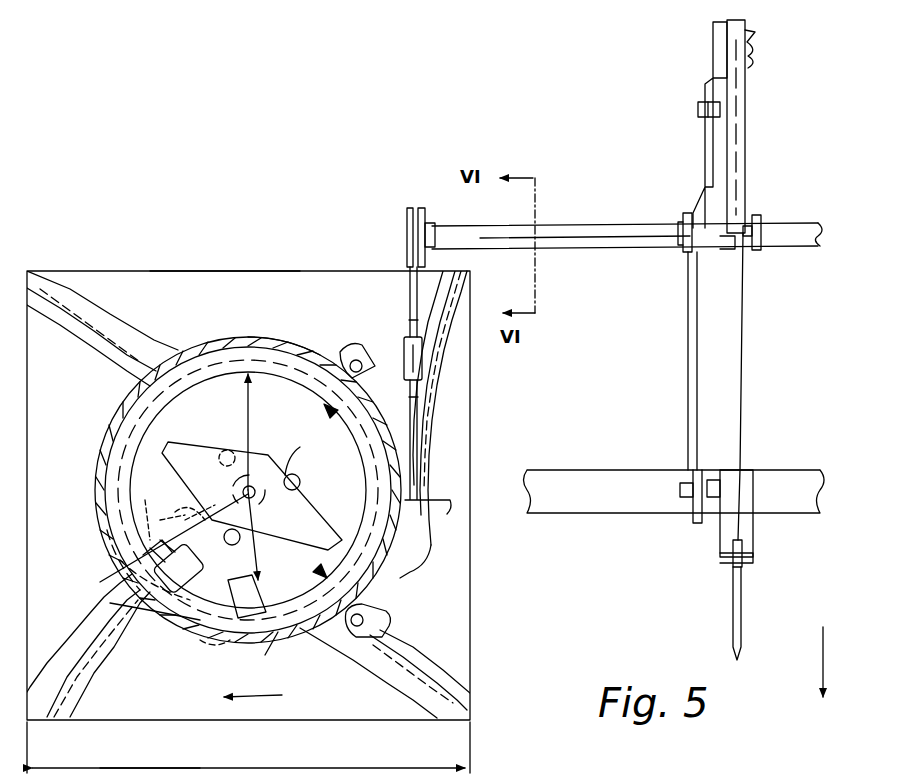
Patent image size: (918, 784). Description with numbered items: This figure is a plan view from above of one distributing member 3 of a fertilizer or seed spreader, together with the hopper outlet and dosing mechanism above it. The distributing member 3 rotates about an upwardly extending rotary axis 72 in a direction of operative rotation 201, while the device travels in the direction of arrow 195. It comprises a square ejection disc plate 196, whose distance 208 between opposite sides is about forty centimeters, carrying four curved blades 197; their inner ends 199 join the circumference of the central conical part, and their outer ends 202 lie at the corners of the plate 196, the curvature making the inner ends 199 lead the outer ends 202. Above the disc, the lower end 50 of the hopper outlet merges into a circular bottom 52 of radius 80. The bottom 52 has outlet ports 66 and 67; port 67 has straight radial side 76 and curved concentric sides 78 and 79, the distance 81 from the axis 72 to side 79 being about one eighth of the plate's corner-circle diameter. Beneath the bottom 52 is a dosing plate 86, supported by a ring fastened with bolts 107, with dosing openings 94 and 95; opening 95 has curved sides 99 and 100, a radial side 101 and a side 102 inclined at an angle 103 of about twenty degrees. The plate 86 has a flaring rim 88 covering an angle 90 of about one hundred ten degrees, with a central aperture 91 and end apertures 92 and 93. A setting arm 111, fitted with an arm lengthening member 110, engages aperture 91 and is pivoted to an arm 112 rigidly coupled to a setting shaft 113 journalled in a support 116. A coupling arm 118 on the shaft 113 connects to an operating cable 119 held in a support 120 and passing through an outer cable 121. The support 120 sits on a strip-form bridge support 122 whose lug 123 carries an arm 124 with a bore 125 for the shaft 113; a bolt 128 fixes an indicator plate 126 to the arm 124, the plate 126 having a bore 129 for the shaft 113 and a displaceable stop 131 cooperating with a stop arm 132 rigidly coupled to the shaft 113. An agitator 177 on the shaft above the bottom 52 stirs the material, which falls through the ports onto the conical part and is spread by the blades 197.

The distributing member 3 is at (146, 268).
The ejection disc plate 196 is at (210, 277).
The outer ends of the blades 202 is at (43, 282).
The curved blades 197 is at (103, 327).
The inner ends of the blades 199 is at (173, 350).
The bottom 52 is at (172, 405).
The dosing plate 86 is at (288, 310).
The lower end of the outlet part 50 is at (115, 448).
The side of the dosing opening 101 is at (102, 493).
The dosing opening 95 is at (108, 510).
The curved side of the dosing opening 99 is at (108, 552).
The radius of the bottom 80 is at (249, 400).
The aperture in the rim 92 is at (355, 353).
The aperture in the rim 93 is at (390, 623).
The flaring rim 88 is at (408, 578).
The central aperture in the rim 91 is at (430, 495).
The distance between axis and port side 81 is at (260, 528).
The rotary axis 72 is at (265, 495).
The angle covered by the rim 90 is at (300, 480).
The bolts 107 is at (230, 450).
The curved side of the dosing opening 100 is at (174, 524).
The angle of side 102 103 is at (180, 516).
The agitator 177 is at (265, 575).
The inner curved side of the port 79 is at (200, 553).
The straight side of the port 76 is at (187, 613).
The outlet port 67 is at (112, 612).
The side of the dosing opening 102 is at (130, 583).
The outer curved side of the port 78 is at (110, 603).
The dosing opening 94 is at (205, 658).
The outlet port 66 is at (260, 656).
The support 116 is at (413, 207).
The arm 112 is at (430, 223).
The setting shaft 113 is at (562, 230).
The setting arm 111 is at (418, 448).
The arm lengthening member 110 is at (423, 372).
The indicator plate 126 is at (720, 53).
The stop arm 132 is at (740, 140).
The displaceable stop 131 is at (747, 63).
The bolt 128 is at (700, 113).
The coupling arm 118 is at (760, 215).
The bore 125 is at (687, 260).
The bore 129 is at (730, 253).
The arm 124 is at (697, 383).
The operating cable 119 is at (745, 377).
The bridge support 122 is at (602, 477).
The lug 123 is at (702, 518).
The support 120 is at (753, 557).
The outer cable 121 is at (733, 610).
The direction of operative travel 195 is at (823, 647).
The direction of operative rotation 201 is at (258, 717).
The distance between opposite sides of the plate 208 is at (187, 767).